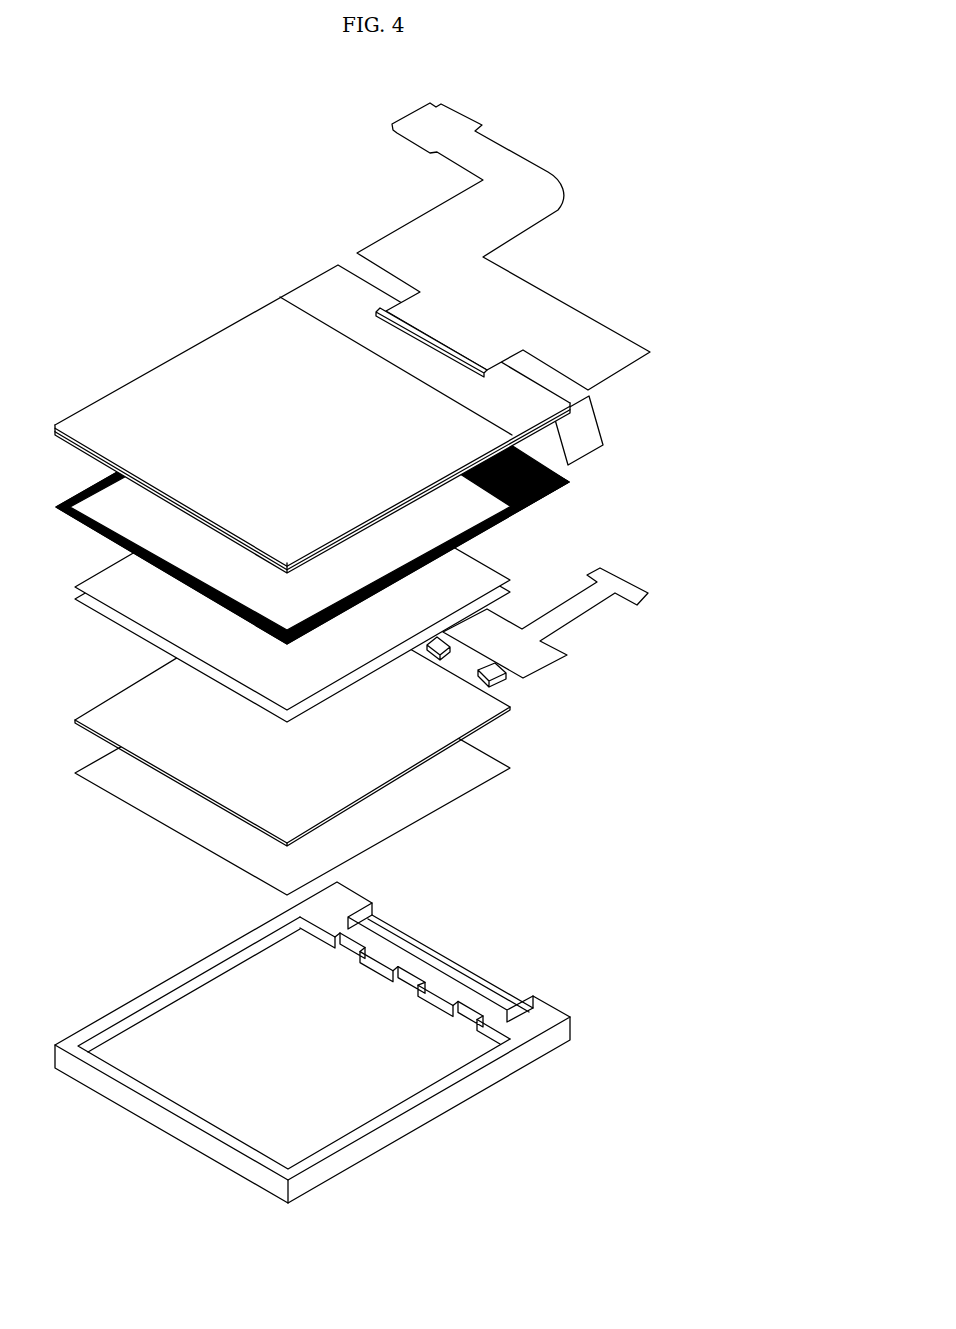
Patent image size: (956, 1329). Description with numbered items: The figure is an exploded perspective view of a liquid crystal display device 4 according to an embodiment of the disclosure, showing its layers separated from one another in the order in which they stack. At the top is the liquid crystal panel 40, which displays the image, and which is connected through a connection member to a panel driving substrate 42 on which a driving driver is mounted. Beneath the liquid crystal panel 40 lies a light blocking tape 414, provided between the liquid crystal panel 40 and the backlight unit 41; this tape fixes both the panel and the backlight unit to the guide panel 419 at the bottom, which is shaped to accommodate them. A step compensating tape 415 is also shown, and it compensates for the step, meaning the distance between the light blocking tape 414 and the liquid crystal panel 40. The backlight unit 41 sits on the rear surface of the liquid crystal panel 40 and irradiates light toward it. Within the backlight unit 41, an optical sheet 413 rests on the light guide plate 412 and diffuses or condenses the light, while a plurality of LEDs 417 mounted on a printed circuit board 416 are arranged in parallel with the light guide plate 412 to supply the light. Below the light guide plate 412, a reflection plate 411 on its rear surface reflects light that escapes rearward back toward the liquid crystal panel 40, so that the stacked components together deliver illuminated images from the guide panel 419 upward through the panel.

The liquid crystal display device 4 is at (577, 125).
The liquid crystal panel 40 is at (180, 357).
The backlight unit 41 is at (652, 677).
The panel driving substrate 42 is at (553, 313).
The reflection plate 411 is at (475, 782).
The light guide plate 412 is at (480, 722).
The optical sheet 413 is at (513, 580).
The light blocking tape 414 is at (552, 492).
The step compensating tape 415 is at (585, 442).
The printed circuit board 416 is at (540, 657).
The LEDs 417 is at (505, 680).
The guide panel 419 is at (480, 980).